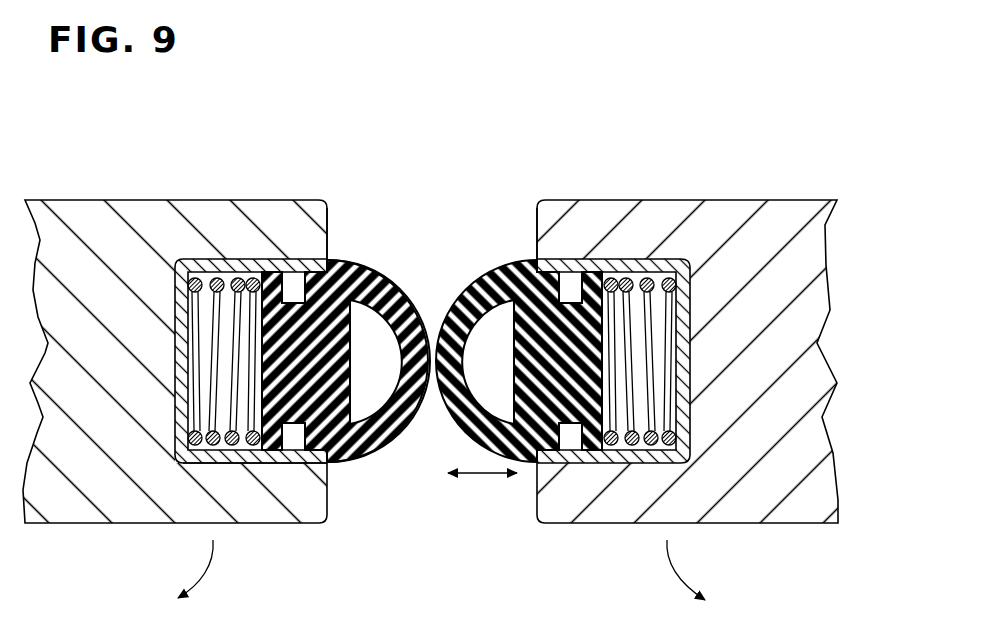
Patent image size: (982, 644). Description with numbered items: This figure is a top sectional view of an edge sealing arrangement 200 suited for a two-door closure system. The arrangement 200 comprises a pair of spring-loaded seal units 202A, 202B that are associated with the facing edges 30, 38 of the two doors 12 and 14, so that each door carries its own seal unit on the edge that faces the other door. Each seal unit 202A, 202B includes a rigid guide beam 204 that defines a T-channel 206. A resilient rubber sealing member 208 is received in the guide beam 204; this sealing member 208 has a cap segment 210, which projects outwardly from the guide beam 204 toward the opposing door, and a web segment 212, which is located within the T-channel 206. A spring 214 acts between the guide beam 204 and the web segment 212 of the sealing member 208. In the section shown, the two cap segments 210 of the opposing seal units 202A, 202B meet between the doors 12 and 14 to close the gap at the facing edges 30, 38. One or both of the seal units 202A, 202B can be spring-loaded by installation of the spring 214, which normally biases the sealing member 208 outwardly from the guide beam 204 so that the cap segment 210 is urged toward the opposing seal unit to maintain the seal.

The door 12 is at (204, 196).
The door 14 is at (681, 196).
The facing edge 30 is at (327, 230).
The facing edge 38 is at (538, 222).
The edge sealing arrangement 200 is at (411, 302).
The seal unit 202A is at (373, 256).
The seal unit 202B is at (476, 259).
The guide beam 204 is at (223, 466).
The T-channel 206 is at (195, 392).
The sealing member 208 is at (381, 453).
The cap segment 210 is at (387, 268).
The web segment 212 is at (263, 342).
The spring 214 is at (210, 370).